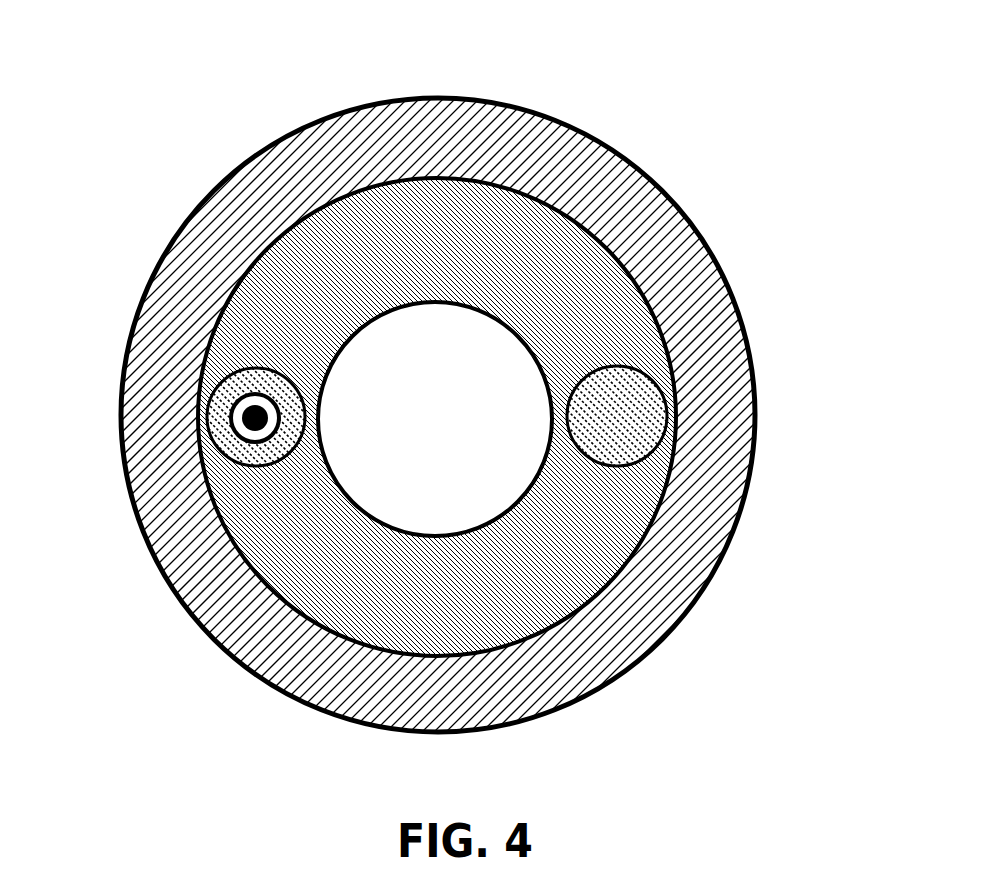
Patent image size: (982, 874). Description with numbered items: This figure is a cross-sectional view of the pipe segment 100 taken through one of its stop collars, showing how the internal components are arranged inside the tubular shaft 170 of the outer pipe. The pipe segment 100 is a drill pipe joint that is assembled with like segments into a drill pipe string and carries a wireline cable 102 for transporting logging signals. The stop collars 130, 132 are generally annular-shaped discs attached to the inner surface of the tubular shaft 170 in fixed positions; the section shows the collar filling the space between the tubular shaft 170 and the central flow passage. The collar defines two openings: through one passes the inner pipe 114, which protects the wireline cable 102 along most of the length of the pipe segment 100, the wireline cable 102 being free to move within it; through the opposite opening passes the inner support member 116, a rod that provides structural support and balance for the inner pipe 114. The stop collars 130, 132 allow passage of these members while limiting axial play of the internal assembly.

The pipe segment 100 is at (770, 160).
The tubular shaft 170 is at (525, 143).
The stop collar 130 is at (491, 346).
The stop collar 132 is at (360, 230).
The inner pipe 114 is at (213, 388).
The wireline cable 102 is at (243, 420).
The inner support member 116 is at (645, 422).